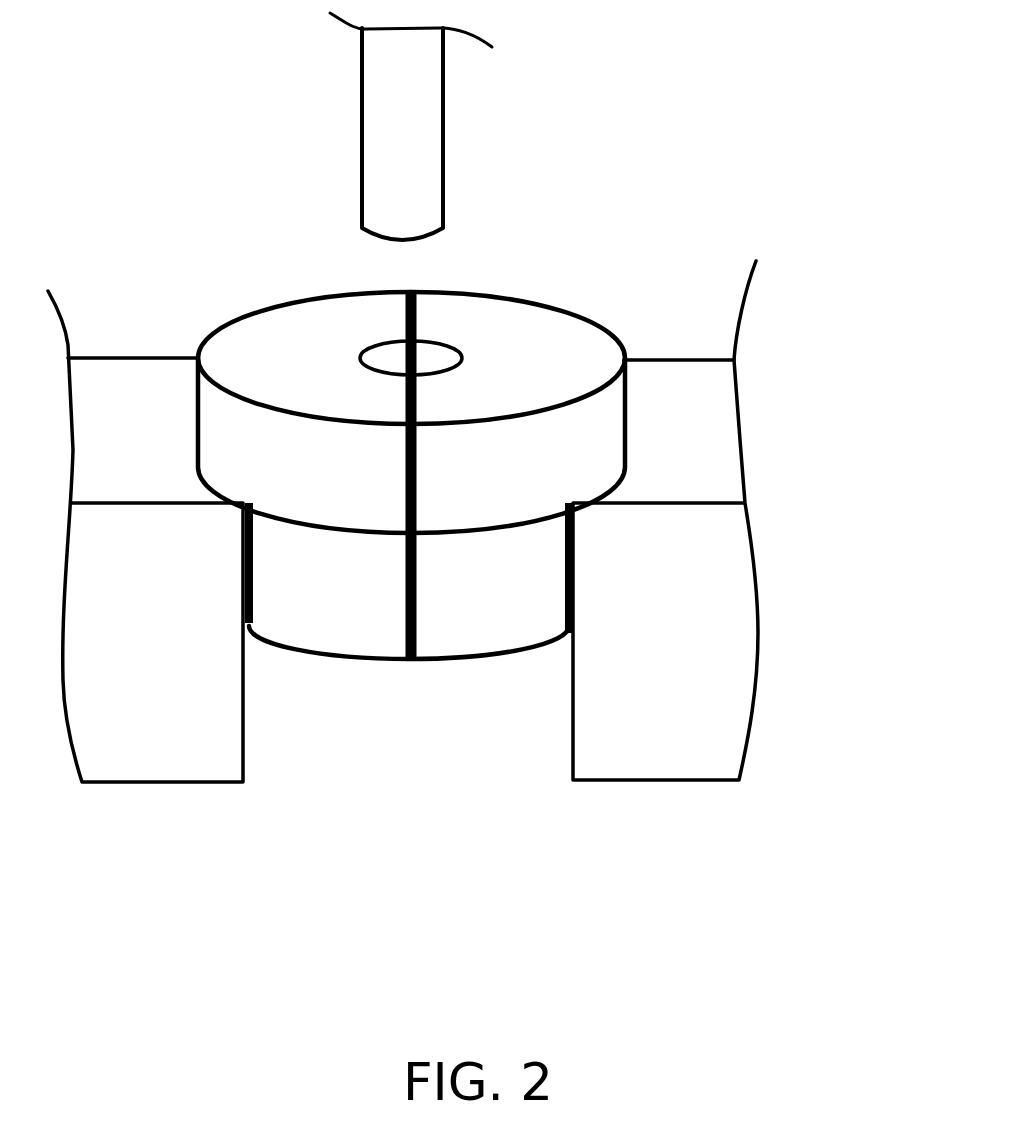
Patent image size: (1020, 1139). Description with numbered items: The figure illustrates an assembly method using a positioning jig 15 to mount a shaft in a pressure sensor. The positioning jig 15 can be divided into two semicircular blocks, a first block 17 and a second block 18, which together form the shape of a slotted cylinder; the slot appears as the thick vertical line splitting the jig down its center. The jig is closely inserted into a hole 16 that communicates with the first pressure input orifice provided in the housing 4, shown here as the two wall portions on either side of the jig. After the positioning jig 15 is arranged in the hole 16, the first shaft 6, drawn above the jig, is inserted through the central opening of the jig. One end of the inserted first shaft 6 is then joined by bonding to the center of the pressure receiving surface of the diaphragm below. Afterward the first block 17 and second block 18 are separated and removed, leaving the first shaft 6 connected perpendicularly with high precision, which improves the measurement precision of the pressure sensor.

The housing 4 is at (705, 620).
The first shaft 6 is at (428, 128).
The positioning jig 15 is at (360, 620).
The hole 16 is at (343, 717).
The first block 17 is at (542, 325).
The second block 18 is at (295, 327).